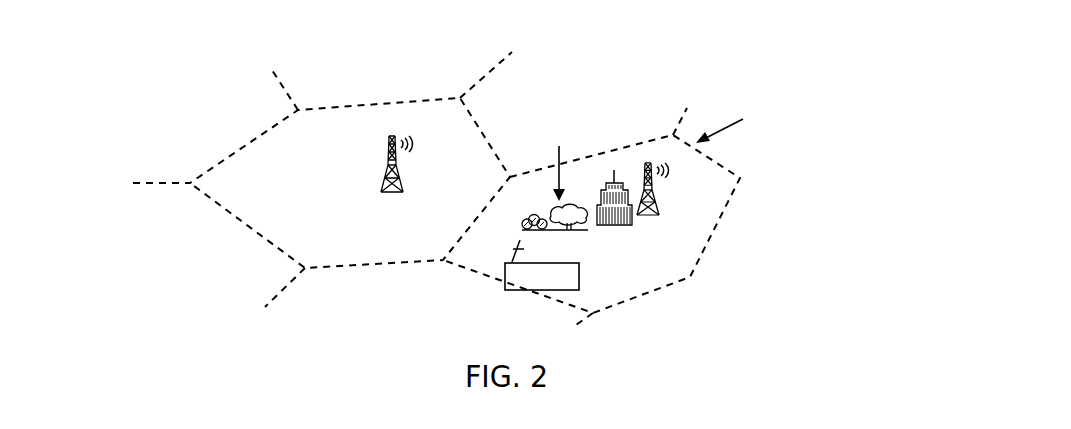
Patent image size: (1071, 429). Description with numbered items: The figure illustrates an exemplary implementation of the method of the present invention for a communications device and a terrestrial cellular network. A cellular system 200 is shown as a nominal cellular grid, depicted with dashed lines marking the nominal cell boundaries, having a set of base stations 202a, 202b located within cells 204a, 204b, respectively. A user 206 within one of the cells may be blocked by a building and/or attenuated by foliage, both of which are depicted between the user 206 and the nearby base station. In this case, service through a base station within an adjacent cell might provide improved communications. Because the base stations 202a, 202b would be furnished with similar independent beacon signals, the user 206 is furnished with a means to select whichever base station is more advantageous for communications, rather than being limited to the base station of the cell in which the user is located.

The cellular system 200 is at (568, 61).
The base station 202a is at (387, 163).
The base station 202b is at (656, 189).
The cell 204a is at (395, 256).
The cell 204b is at (663, 272).
The user 206 is at (538, 263).